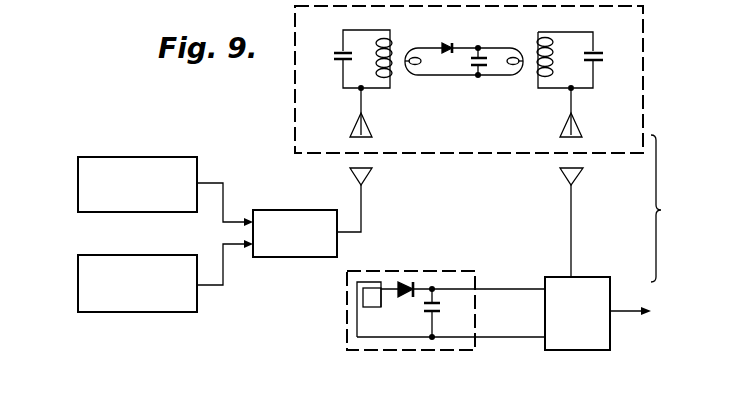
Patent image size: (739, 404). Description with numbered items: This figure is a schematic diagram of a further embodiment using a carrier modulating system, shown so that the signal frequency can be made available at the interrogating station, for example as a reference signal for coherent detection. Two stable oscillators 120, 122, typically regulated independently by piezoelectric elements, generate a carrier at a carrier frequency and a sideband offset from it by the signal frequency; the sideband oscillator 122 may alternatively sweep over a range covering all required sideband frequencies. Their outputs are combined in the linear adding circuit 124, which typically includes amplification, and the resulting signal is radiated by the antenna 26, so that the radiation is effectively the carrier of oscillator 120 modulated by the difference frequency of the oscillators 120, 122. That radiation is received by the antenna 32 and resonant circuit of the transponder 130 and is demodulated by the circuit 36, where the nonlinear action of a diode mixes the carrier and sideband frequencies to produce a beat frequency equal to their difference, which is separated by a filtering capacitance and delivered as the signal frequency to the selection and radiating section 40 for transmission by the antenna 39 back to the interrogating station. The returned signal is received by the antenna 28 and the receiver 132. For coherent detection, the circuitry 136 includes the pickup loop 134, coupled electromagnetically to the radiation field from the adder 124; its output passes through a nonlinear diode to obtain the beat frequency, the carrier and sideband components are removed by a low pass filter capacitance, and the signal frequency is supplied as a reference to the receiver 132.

The carrier oscillator 120 is at (78, 187).
The sideband oscillator 122 is at (78, 276).
The linear adding circuit 124 is at (322, 209).
The antenna 26 is at (373, 179).
The receiving antenna 28 is at (583, 179).
The transponder 130 is at (680, 60).
The antenna 32 is at (373, 127).
The demodulating circuit 36 is at (469, 84).
The selection and radiating section 40 is at (544, 100).
The antenna 39 is at (583, 129).
The receiver 132 is at (584, 277).
The pickup loop 134 is at (375, 282).
The reference signal circuitry 136 is at (446, 313).